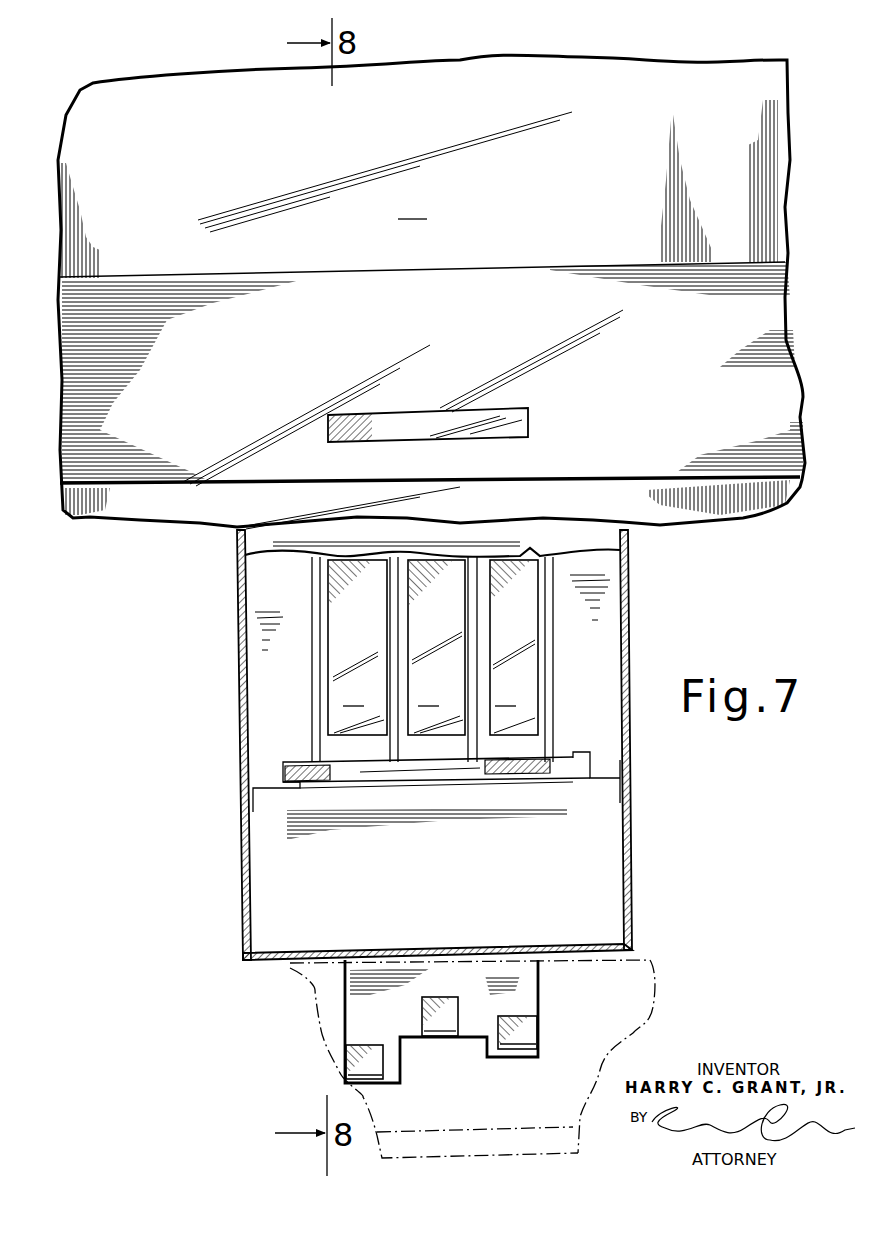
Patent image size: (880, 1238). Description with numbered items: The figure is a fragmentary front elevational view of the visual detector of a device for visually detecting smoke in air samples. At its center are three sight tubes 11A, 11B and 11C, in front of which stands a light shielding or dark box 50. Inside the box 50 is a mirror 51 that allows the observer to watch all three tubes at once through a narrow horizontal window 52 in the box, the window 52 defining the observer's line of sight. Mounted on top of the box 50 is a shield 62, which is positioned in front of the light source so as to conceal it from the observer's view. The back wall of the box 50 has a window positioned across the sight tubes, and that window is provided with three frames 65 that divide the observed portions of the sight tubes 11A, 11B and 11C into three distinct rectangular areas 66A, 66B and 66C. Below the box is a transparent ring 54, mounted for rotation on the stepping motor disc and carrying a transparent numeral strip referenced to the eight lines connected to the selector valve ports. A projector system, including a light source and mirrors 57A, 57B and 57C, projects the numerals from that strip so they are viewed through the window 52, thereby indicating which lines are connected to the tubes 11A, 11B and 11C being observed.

The sight tube 11A is at (528, 710).
The sight tube 11B is at (420, 728).
The sight tube 11C is at (352, 652).
The light shielding or dark box 50 is at (371, 745).
The mirror 51 is at (511, 777).
The narrow horizontal window 52 is at (433, 392).
The transparent ring 54 is at (665, 960).
The mirror 57A is at (530, 1035).
The mirror 57B is at (430, 1006).
The mirror 57C is at (357, 1063).
The shield 62 is at (431, 292).
The frame 65 is at (342, 750).
The rectangular area 66A is at (514, 647).
The rectangular area 66B is at (436, 647).
The rectangular area 66C is at (349, 659).